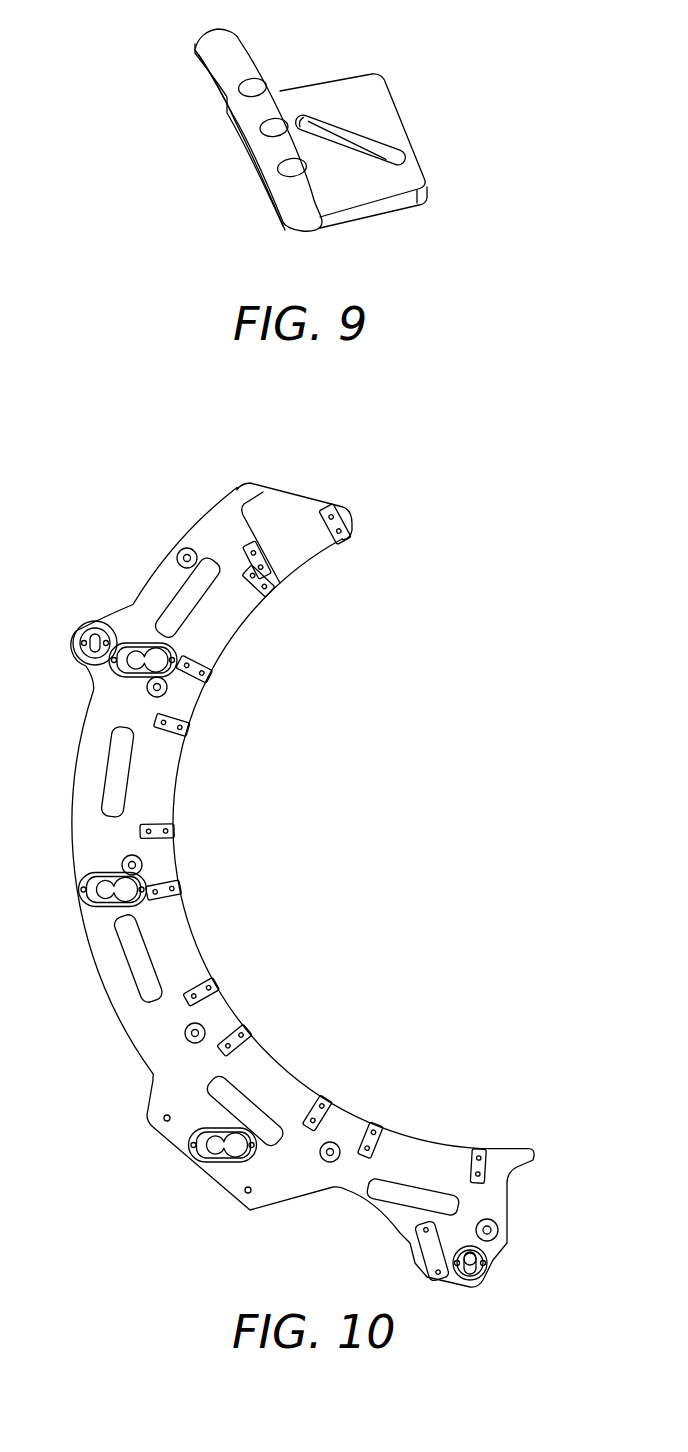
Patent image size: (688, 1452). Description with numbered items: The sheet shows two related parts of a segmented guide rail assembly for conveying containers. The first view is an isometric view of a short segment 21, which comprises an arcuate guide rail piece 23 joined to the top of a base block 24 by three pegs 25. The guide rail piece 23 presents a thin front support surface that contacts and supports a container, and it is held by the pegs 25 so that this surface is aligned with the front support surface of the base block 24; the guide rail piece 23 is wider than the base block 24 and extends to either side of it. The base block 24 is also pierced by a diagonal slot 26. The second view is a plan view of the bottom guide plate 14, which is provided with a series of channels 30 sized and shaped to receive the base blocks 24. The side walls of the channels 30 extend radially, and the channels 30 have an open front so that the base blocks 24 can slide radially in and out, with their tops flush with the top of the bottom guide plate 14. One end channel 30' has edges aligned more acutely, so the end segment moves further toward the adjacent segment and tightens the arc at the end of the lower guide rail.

In FIG. 9, the short segment 21 is at (266, 229).
In FIG. 9, the guide rail piece 23 is at (222, 56).
In FIG. 9, the base block 24 is at (340, 88).
In FIG. 9, the pegs 25 is at (283, 168).
In FIG. 9, the diagonal slot 26 is at (387, 153).
In FIG. 10, the bottom guide plate 14 is at (281, 831).
In FIG. 10, the channels 30 is at (280, 885).
In FIG. 10, the end channel 30' is at (304, 547).